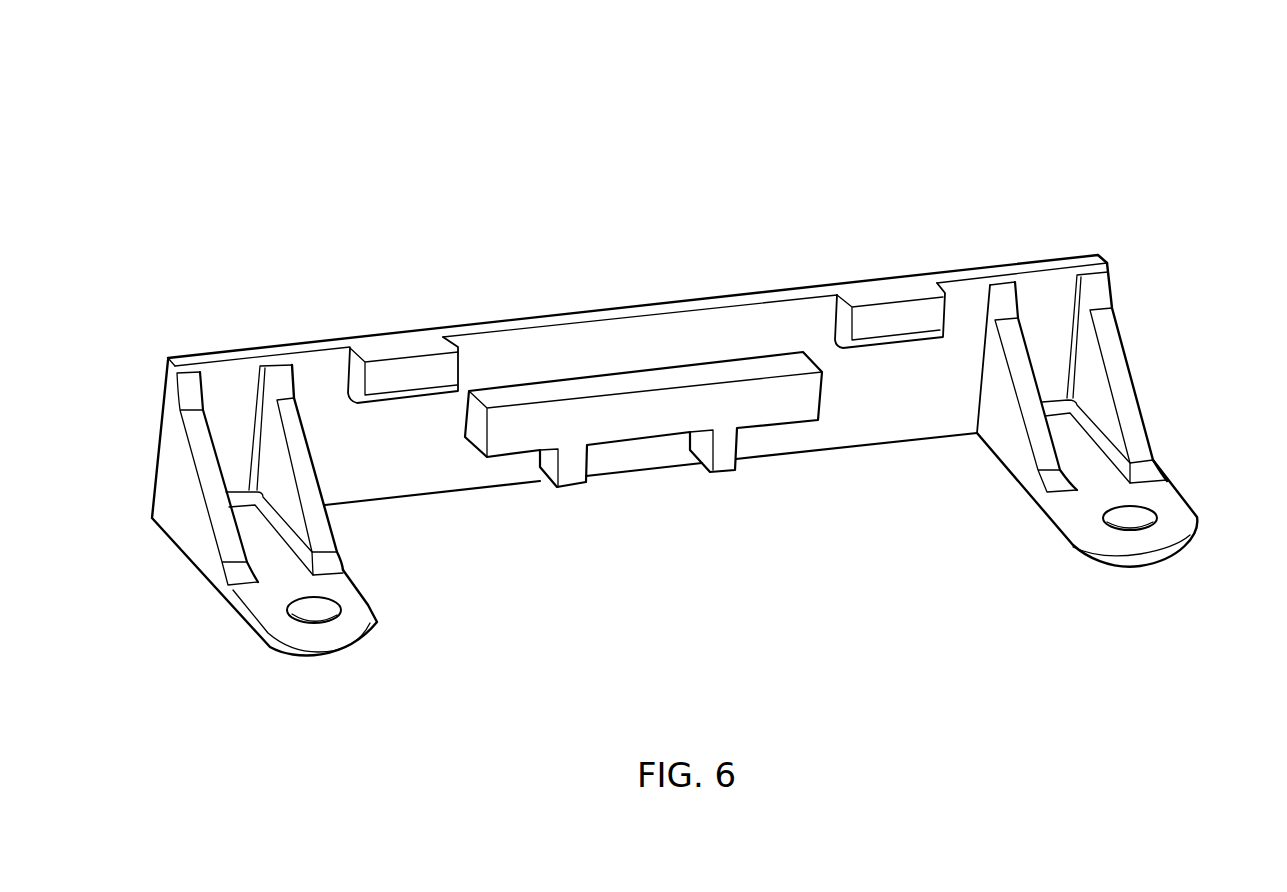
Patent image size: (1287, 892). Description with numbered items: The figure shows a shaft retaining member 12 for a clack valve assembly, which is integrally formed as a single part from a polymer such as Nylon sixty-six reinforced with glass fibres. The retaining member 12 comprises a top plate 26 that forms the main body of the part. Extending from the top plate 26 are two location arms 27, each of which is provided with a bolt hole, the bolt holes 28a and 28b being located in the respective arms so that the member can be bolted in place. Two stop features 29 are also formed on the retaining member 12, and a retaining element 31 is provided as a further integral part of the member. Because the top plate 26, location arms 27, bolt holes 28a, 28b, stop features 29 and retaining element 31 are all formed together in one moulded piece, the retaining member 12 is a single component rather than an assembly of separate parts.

The retaining member 12 is at (772, 158).
The top plate 26 is at (883, 427).
The location arms 27 is at (262, 607).
The bolt hole 28a is at (312, 612).
The bolt hole 28b is at (1132, 518).
The stop features 29 is at (396, 344).
The retaining element 31 is at (640, 420).